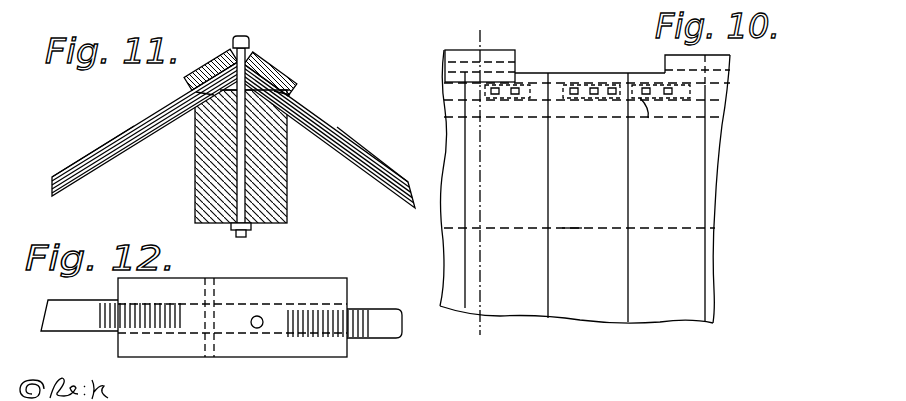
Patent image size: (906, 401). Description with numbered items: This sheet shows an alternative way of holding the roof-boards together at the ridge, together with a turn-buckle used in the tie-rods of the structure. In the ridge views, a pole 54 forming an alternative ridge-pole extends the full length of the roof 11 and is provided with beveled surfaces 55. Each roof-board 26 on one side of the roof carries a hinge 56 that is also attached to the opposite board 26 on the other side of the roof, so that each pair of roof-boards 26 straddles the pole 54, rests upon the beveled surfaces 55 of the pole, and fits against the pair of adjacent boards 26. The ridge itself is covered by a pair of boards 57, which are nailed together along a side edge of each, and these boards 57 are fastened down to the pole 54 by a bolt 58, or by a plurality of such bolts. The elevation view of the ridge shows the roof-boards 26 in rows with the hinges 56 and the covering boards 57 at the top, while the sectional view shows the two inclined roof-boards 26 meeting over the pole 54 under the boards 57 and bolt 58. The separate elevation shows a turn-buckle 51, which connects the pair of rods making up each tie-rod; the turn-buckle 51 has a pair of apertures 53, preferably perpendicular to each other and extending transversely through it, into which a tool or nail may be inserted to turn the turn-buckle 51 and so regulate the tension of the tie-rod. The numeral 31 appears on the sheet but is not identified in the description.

In FIG. 11, the roof 11 is at (134, 126).
In FIG. 10, the roof 11 is at (420, 221).
In FIG. 11, the roof-board 26 is at (114, 142).
In FIG. 10, the roof-board 26 is at (740, 202).
In FIG. 11, the roof support 31 is at (286, 8).
In FIG. 12, the turn-buckle 51 is at (256, 281).
In FIG. 12, the aperture 53 is at (255, 330).
In FIG. 11, the pole 54 is at (268, 185).
In FIG. 10, the pole 54 is at (572, 230).
In FIG. 11, the beveled surface 55 is at (210, 95).
In FIG. 12, the beveled surface 55 is at (205, 342).
In FIG. 10, the beveled surface 55 is at (648, 118).
In FIG. 11, the hinge 56 is at (278, 70).
In FIG. 10, the hinge 56 is at (522, 99).
In FIG. 11, the board 57 is at (208, 62).
In FIG. 10, the board 57 is at (505, 58).
In FIG. 11, the bolt 58 is at (243, 36).